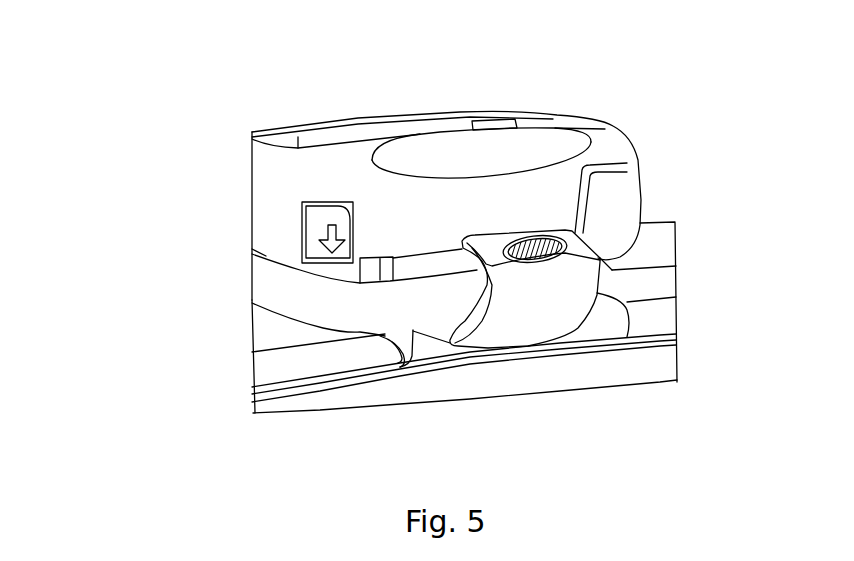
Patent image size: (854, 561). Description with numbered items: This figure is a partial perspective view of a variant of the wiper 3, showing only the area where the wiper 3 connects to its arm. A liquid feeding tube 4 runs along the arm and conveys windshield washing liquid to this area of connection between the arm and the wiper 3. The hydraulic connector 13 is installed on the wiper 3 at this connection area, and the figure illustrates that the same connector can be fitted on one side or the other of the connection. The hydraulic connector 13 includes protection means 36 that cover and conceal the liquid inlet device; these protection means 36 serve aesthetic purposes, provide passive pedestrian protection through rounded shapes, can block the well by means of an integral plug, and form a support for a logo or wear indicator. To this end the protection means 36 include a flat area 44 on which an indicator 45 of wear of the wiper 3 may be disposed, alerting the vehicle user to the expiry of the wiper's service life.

The wiper 3 is at (222, 331).
The liquid feeding tube 4 is at (290, 292).
The hydraulic connector 13 is at (430, 341).
The protection means 36 is at (589, 233).
The flat area 44 is at (490, 250).
The indicator of wear 45 is at (600, 262).